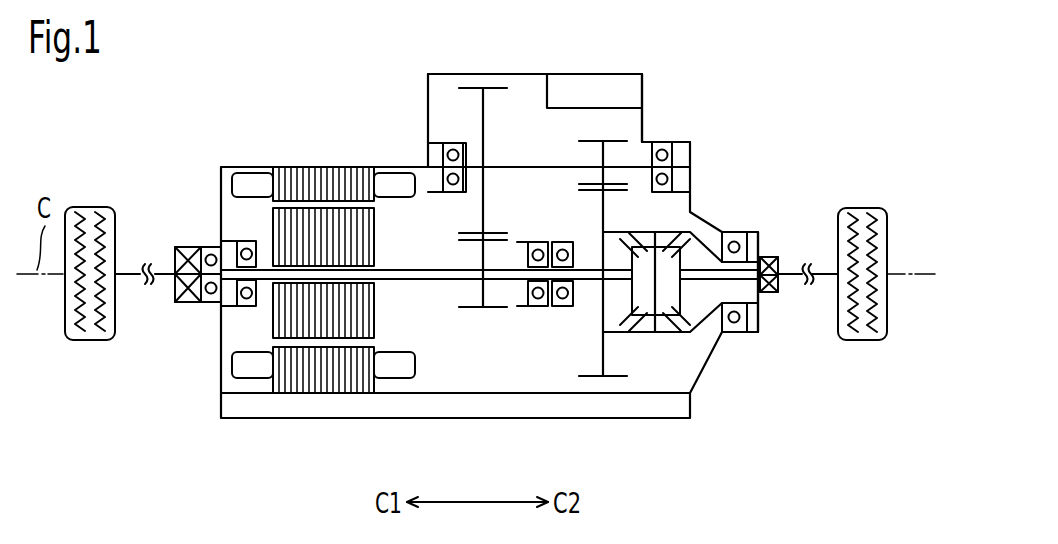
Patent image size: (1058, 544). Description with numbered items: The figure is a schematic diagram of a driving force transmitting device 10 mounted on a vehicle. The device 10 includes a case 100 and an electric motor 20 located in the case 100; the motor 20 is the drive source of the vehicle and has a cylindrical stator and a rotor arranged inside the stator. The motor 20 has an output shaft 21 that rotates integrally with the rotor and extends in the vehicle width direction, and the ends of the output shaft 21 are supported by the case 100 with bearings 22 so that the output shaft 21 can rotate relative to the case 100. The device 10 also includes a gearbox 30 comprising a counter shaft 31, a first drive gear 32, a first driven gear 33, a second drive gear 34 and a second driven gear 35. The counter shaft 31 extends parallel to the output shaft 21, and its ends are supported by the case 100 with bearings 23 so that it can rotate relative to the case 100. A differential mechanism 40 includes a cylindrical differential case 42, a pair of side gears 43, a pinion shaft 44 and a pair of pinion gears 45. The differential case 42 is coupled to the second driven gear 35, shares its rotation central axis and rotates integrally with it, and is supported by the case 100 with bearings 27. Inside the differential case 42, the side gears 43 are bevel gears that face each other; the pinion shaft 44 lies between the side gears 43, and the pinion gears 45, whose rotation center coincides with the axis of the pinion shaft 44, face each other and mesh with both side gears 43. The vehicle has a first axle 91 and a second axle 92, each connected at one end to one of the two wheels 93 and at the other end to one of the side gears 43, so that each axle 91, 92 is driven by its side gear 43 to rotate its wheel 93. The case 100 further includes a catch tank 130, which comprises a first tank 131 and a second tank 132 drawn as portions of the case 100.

The driving force transmitting device 10 is at (267, 85).
The electric motor 20 is at (248, 167).
The output shaft 21 is at (417, 269).
The bearings 22 is at (246, 307).
The bearings 23 is at (452, 143).
The bearings 27 is at (574, 253).
The gearbox 30 is at (445, 103).
The counter shaft 31 is at (553, 166).
The first drive gear 32 is at (469, 308).
The first driven gear 33 is at (498, 87).
The second drive gear 34 is at (598, 139).
The second driven gear 35 is at (580, 377).
The differential mechanism 40 is at (706, 175).
The differential case 42 is at (638, 333).
The side gears 43 is at (684, 284).
The pinion shaft 44 is at (667, 236).
The pinion gears 45 is at (648, 240).
The first axle 91 is at (157, 268).
The second axle 92 is at (788, 272).
The wheels 93 is at (90, 207).
The case 100 is at (455, 73).
The catch tank 130 is at (489, 245).
The first tank 131 is at (427, 407).
The second tank 132 is at (587, 86).